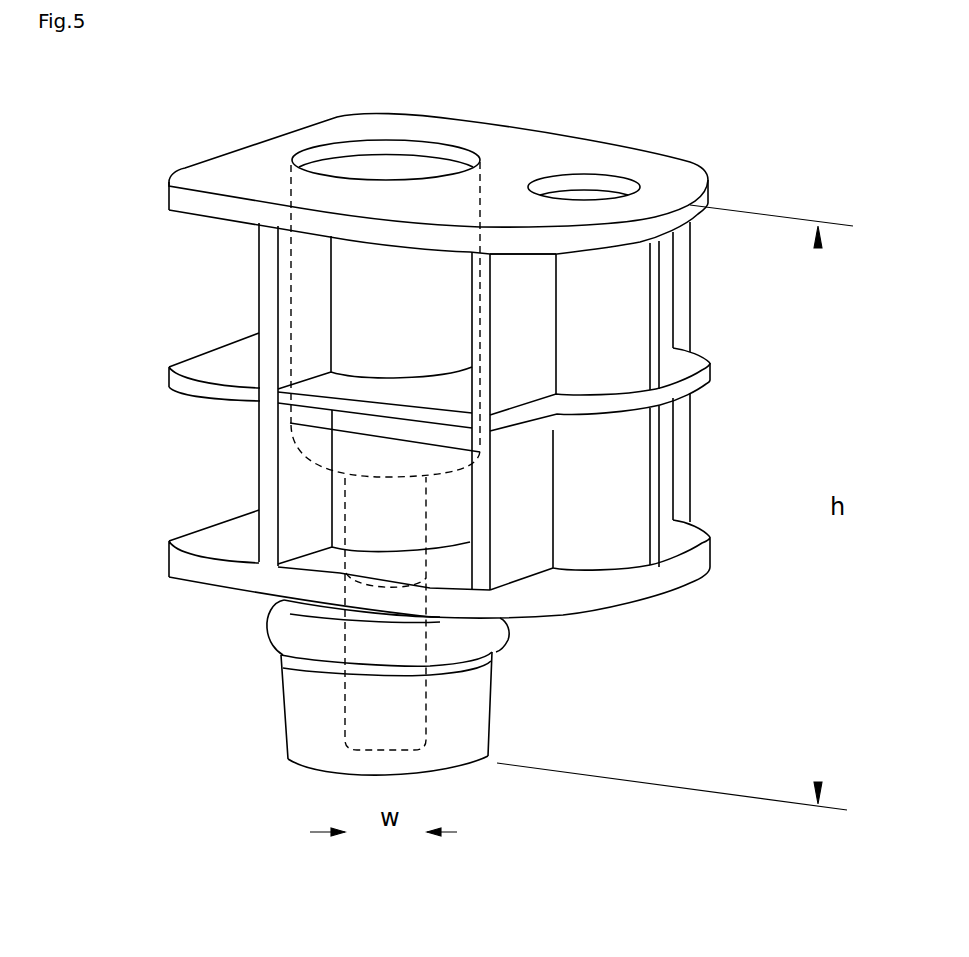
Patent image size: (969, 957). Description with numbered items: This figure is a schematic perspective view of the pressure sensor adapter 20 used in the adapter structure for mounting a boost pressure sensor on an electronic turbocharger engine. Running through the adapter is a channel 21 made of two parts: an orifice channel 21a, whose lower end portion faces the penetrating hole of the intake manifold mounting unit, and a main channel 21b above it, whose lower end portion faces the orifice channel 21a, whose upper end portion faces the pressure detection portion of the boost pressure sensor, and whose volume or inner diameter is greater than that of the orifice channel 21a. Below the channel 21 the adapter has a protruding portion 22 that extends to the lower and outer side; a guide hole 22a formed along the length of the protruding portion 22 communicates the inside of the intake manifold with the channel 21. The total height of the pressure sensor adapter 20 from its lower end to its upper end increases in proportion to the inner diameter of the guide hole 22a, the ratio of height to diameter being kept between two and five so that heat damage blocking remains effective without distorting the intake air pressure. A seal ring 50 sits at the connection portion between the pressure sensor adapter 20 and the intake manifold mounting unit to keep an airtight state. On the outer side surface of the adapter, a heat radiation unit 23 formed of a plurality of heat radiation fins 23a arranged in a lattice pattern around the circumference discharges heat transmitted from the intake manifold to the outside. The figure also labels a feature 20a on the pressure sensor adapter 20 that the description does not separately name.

The pressure sensor adapter 20 is at (483, 346).
The fastening hole 20a is at (592, 185).
The channel 21 is at (376, 327).
The orifice channel 21a is at (347, 493).
The main channel 21b is at (292, 362).
The protruding portion 22 is at (384, 626).
The guide hole 22a is at (427, 701).
The heat radiation unit 23 is at (575, 467).
The heat radiation fins 23a is at (535, 523).
The seal ring 50 is at (283, 630).